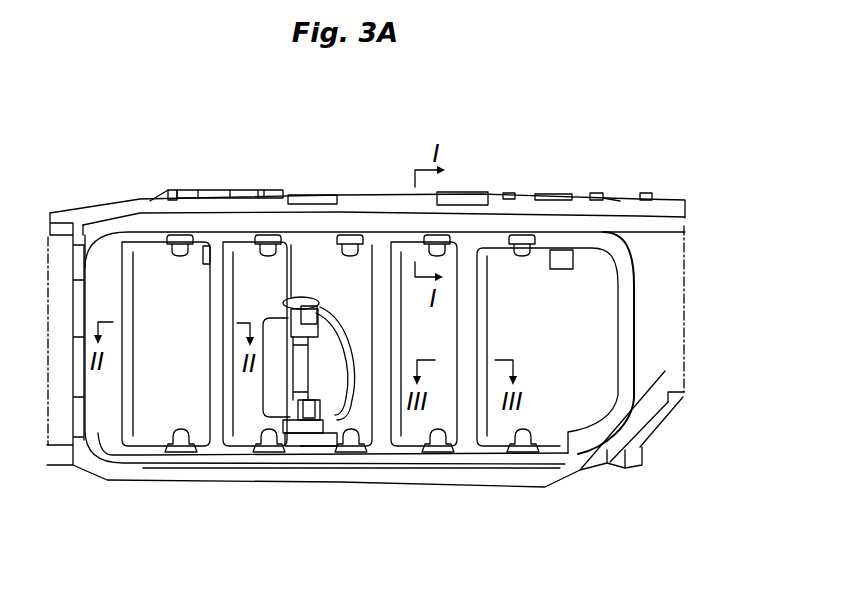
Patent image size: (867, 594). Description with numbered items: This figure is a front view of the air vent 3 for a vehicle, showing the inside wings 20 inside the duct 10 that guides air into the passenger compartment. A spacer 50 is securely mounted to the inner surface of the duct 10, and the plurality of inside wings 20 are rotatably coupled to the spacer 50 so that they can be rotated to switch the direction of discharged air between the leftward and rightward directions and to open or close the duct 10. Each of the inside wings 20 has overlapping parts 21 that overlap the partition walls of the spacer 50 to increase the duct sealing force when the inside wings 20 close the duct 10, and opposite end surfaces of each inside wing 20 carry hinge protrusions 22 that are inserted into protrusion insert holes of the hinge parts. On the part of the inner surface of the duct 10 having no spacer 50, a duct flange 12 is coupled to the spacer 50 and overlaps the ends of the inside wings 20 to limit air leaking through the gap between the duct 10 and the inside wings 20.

The air vent 3 is at (516, 176).
The duct 10 is at (623, 208).
The duct flange 12 is at (623, 357).
The inside wings 20 is at (423, 344).
The overlapping parts 21 is at (222, 245).
The hinge protrusions 22 is at (356, 245).
The spacer 50 is at (302, 233).